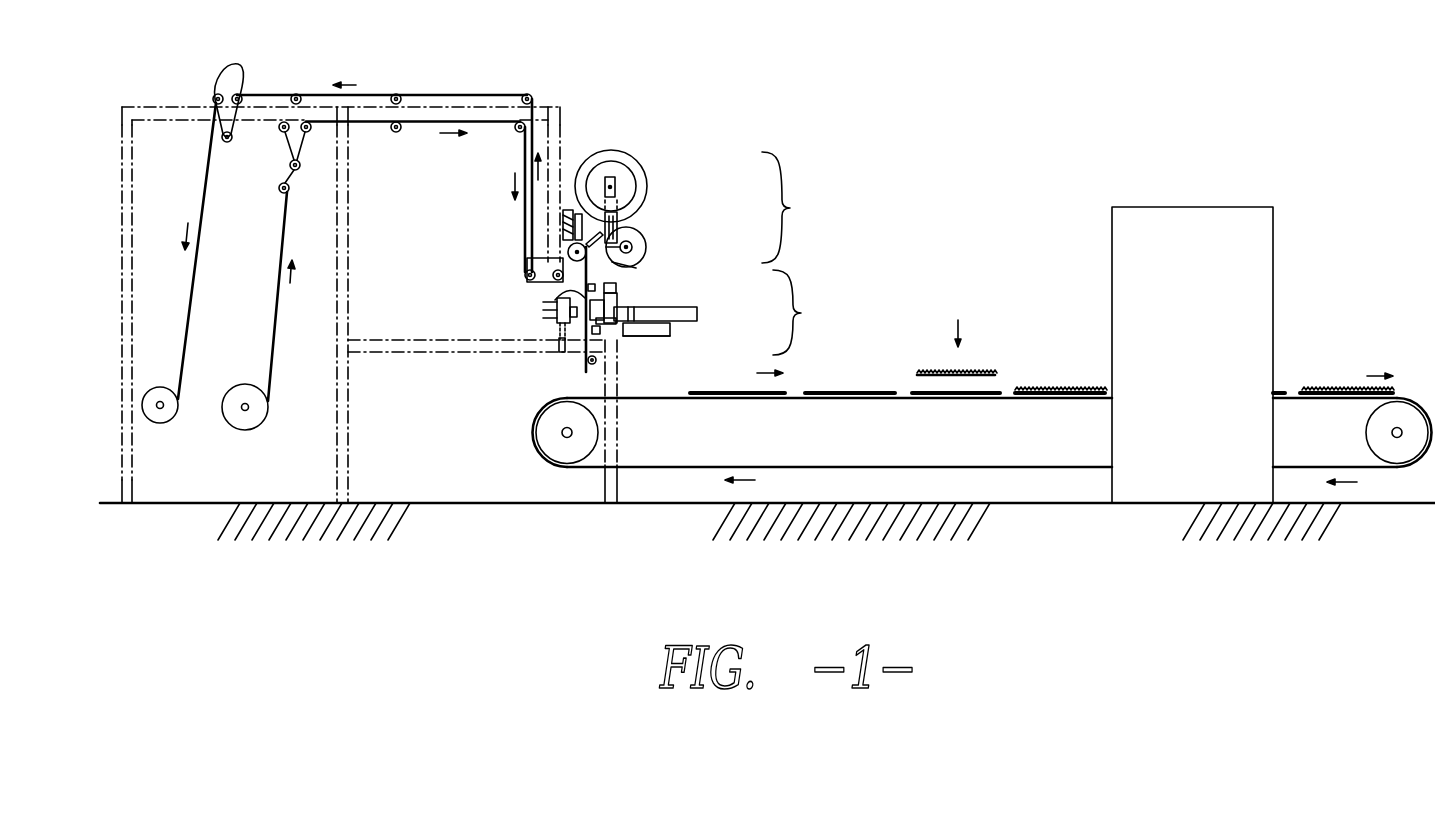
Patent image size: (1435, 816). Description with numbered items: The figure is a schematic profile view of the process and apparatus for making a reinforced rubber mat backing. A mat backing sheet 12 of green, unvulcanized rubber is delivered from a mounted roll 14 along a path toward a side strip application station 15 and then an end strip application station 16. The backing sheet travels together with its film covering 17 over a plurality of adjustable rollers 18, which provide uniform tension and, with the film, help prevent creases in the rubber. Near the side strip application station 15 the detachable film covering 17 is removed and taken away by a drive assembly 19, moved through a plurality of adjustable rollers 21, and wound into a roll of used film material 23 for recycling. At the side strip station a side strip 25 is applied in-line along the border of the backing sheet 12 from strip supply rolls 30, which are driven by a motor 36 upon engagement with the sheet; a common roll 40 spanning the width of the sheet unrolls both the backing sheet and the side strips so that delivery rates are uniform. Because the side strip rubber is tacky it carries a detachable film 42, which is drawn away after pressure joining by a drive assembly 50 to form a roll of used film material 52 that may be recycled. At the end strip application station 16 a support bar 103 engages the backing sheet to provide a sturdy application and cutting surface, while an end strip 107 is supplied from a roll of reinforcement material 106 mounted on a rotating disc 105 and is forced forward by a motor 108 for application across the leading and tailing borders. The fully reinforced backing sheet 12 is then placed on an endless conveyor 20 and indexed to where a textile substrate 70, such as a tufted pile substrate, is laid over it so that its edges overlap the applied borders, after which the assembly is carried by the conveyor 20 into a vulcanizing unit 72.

The mat backing sheet 12 is at (280, 318).
The mounted roll 14 is at (267, 423).
The side strip application station 15 is at (795, 207).
The end strip application station 16 is at (807, 312).
The film covering 17 is at (462, 94).
The adjustable rollers 18 is at (282, 186).
The drive assembly 19 is at (540, 264).
The conveyor 20 is at (1335, 390).
The adjustable rollers 21 is at (300, 94).
The roll of used film material 23 is at (168, 418).
The side strip 25 is at (912, 392).
The strip supply rolls 30 is at (618, 150).
The motor 36 is at (628, 218).
The common roll 40 is at (568, 247).
The detachable film 42 is at (638, 242).
The drive assembly 50 is at (632, 265).
The roll of used film material 52 is at (645, 257).
The textile substrate 70 is at (985, 372).
The vulcanizing unit 72 is at (1133, 207).
The support bar 103 is at (557, 293).
The rotating disc 105 is at (672, 333).
The roll of reinforcement material 106 is at (645, 305).
The end strip 107 is at (697, 313).
The motor 108 is at (640, 337).